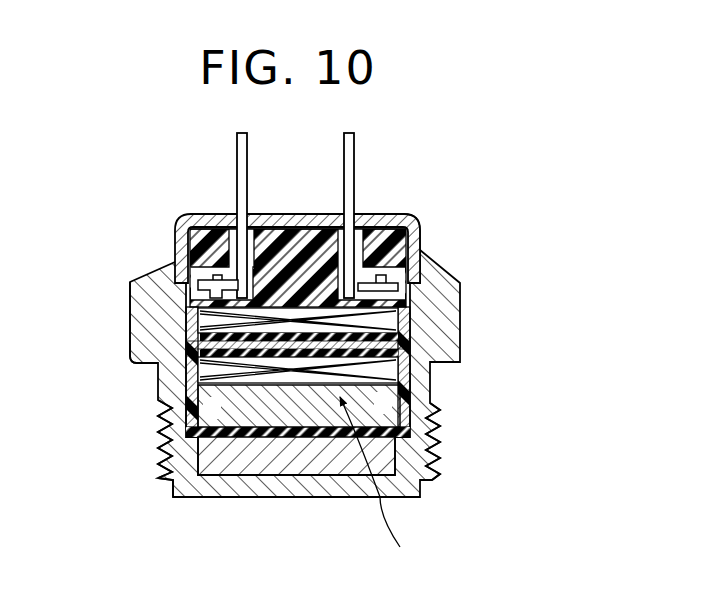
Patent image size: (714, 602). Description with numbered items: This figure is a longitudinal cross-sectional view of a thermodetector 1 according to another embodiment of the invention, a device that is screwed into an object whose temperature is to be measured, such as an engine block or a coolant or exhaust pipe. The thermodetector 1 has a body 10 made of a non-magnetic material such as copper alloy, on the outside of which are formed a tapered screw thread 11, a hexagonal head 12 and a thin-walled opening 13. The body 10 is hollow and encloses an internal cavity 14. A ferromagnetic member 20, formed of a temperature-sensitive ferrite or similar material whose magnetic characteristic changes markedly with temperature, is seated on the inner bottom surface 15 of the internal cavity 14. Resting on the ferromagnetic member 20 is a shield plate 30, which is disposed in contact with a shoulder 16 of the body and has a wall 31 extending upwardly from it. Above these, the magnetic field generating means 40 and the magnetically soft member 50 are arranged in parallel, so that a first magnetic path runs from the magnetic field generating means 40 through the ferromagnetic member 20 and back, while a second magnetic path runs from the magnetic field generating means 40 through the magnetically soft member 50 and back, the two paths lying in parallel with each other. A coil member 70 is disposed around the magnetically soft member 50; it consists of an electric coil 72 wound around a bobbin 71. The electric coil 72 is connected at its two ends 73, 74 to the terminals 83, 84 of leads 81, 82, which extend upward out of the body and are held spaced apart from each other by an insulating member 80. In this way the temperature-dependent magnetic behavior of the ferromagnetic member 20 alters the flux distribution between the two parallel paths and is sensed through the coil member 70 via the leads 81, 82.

The thermodetector 1 is at (460, 226).
The body 10 is at (437, 270).
The tapered screw thread 11 is at (432, 462).
The hexagonal head 12 is at (138, 310).
The thin-walled opening 13 is at (390, 222).
The internal cavity 14 is at (172, 478).
The inner bottom surface 15 is at (212, 498).
The shoulder 16 is at (170, 432).
The ferromagnetic member 20 is at (283, 462).
The shield plate 30 is at (253, 440).
The wall 31 is at (403, 336).
The magnetic field generating means 40 is at (313, 410).
The magnetically soft member 50 is at (192, 367).
The coil member 70 is at (385, 484).
The bobbin 71 is at (380, 323).
The electric coil 72 is at (353, 372).
The coil end 73 is at (180, 292).
The coil end 74 is at (380, 297).
The insulating member 80 is at (283, 228).
The lead 81 is at (236, 185).
The lead 82 is at (355, 160).
The terminal 83 is at (200, 285).
The terminal 84 is at (453, 227).